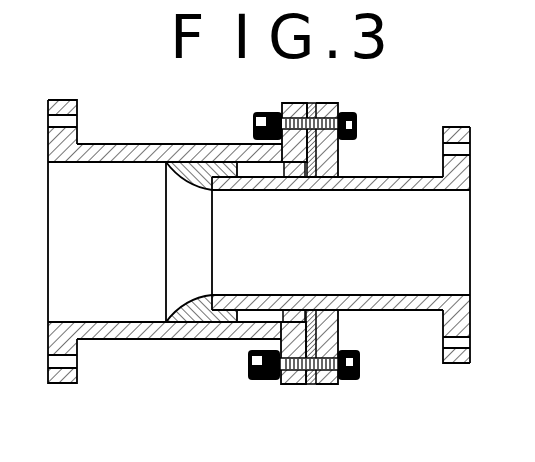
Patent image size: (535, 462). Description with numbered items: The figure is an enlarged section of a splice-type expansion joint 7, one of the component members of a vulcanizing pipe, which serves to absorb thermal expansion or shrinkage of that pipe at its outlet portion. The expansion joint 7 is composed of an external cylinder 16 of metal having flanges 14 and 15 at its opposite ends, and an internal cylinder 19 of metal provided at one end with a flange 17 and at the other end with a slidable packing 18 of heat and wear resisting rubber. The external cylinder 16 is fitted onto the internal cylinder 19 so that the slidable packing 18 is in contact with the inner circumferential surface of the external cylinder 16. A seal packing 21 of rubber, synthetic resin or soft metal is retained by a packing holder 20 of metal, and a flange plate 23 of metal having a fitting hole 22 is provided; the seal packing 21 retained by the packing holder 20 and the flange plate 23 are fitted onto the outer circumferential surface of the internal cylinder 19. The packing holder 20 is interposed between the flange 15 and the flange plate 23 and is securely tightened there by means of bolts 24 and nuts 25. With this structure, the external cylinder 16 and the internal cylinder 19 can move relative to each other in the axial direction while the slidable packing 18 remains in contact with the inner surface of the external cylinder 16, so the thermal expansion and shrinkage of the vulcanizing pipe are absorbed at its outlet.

The expansion joint 7 is at (173, 347).
The flange 14 is at (61, 106).
The flange 15 is at (289, 103).
The external cylinder 16 is at (125, 142).
The flange 17 is at (453, 137).
The slidable packing 18 is at (188, 170).
The internal cylinder 19 is at (412, 172).
The packing holder 20 is at (278, 161).
The seal packing 21 is at (341, 148).
The fitting hole 22 is at (342, 170).
The flange plate 23 is at (323, 103).
The bolts 24 is at (351, 111).
The nuts 25 is at (266, 111).